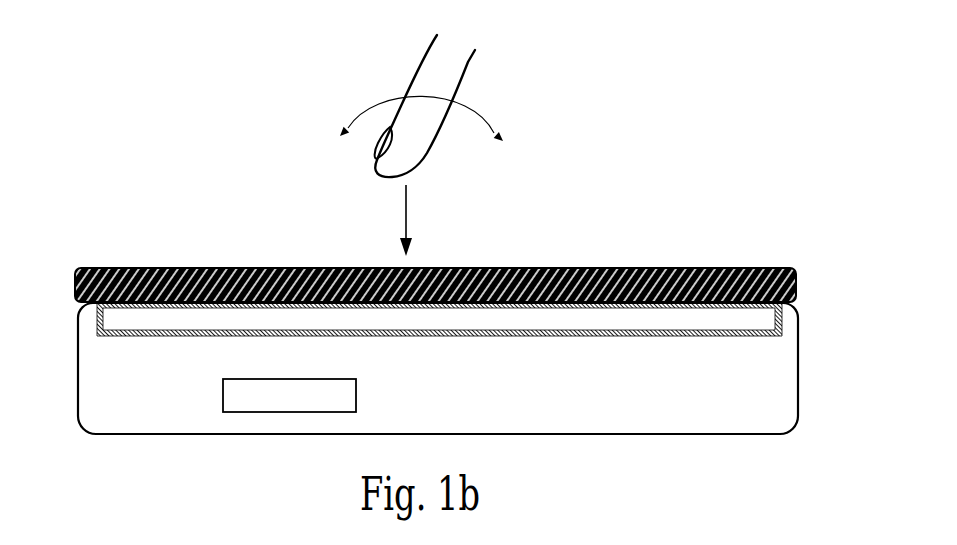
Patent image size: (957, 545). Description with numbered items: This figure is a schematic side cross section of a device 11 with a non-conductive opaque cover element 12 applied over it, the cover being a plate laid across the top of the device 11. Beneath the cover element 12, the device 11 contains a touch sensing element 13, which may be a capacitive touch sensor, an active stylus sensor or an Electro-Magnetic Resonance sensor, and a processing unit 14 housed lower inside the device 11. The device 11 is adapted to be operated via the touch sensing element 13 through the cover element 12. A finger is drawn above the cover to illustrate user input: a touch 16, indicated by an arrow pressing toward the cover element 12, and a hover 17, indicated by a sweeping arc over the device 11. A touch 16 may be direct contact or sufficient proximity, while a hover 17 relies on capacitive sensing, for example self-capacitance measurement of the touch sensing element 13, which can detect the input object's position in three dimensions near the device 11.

The device 11 is at (798, 366).
The cover element 12 is at (797, 286).
The touch sensing element 13 is at (606, 337).
The processing unit 14 is at (356, 393).
The touch 16 is at (428, 220).
The hover 17 is at (397, 124).